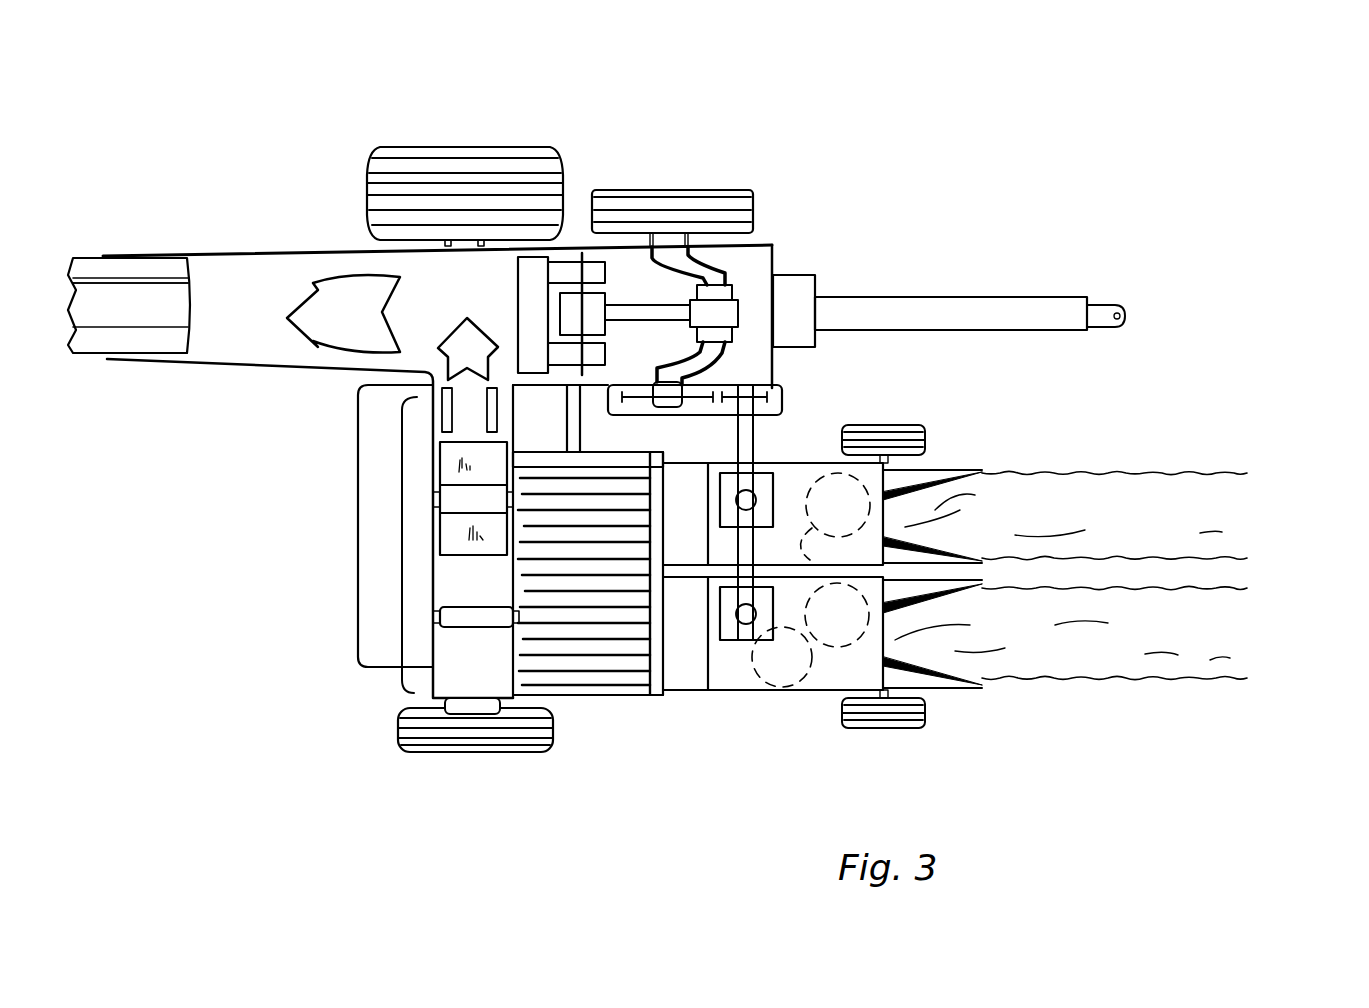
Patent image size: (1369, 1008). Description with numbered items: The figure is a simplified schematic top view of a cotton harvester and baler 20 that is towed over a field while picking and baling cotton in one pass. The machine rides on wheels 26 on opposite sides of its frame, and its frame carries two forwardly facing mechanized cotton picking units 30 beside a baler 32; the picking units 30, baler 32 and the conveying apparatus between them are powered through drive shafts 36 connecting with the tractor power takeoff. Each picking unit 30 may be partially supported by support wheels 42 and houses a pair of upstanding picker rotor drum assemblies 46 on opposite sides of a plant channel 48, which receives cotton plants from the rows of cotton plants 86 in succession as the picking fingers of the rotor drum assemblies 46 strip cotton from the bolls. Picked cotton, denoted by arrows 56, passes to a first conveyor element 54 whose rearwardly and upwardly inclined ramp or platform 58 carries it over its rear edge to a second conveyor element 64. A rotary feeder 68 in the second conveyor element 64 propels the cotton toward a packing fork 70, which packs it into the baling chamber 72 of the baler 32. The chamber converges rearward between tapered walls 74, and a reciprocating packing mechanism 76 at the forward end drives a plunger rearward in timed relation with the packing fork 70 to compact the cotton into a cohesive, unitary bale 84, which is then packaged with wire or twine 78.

The cotton harvester and baler 20 is at (993, 147).
The wheels 26 is at (488, 147).
The mechanized cotton picking unit 30 is at (807, 463).
The baler 32 is at (742, 287).
The drive shaft 36 is at (755, 548).
The support wheels 42 is at (925, 440).
The picker rotor drum assemblies 46 is at (741, 703).
The plant channel 48 is at (933, 515).
The first conveyor element 54 is at (635, 700).
The arrows denoting picked cotton 56 is at (450, 328).
The ramp or platform 58 is at (600, 695).
The second conveyor element 64 is at (402, 533).
The rotary feeder 68 is at (487, 557).
The packing fork 70 is at (443, 410).
The baling chamber 72 is at (450, 297).
The tapered walls 74 is at (345, 245).
The reciprocating packing mechanism 76 is at (772, 276).
The packaging material 78 is at (147, 328).
The bale 84 is at (83, 258).
The rows of cotton plants 86 is at (1235, 510).